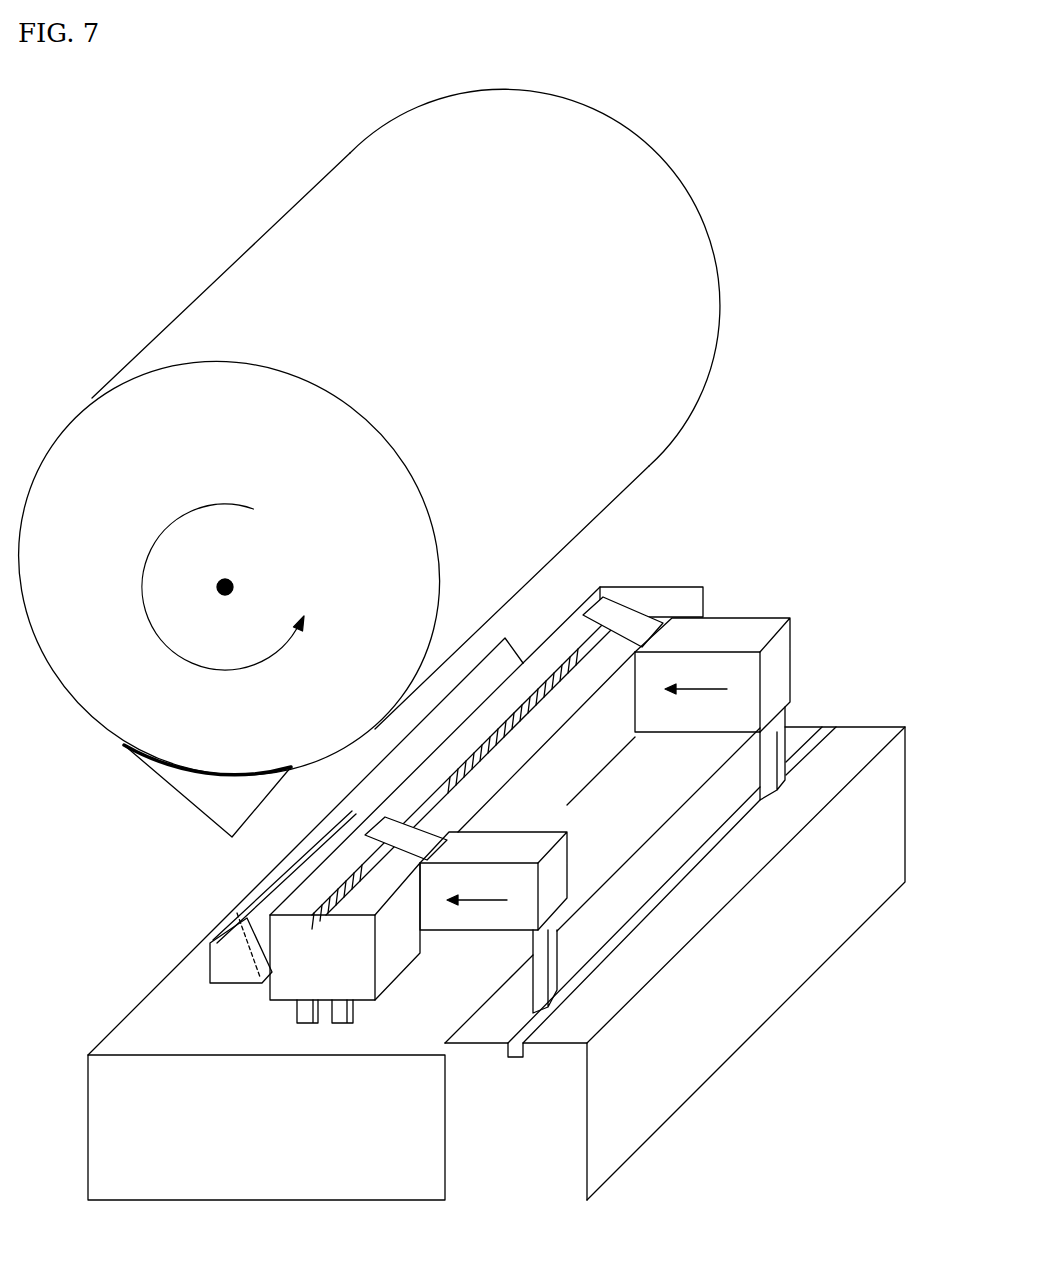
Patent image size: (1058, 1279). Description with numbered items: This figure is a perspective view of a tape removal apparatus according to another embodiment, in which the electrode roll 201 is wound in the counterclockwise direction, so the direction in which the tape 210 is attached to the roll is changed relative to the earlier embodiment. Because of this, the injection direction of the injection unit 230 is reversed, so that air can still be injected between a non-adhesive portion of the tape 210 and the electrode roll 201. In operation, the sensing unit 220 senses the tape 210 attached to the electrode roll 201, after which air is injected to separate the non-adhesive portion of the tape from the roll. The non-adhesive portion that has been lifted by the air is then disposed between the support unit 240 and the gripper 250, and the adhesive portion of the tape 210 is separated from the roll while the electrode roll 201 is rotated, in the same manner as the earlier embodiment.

The electrode roll 201 is at (254, 272).
The tape 210 is at (607, 607).
The sensing unit 220 is at (363, 853).
The injection unit 230 is at (223, 953).
The support unit 240 is at (673, 603).
The gripper 250 is at (777, 665).